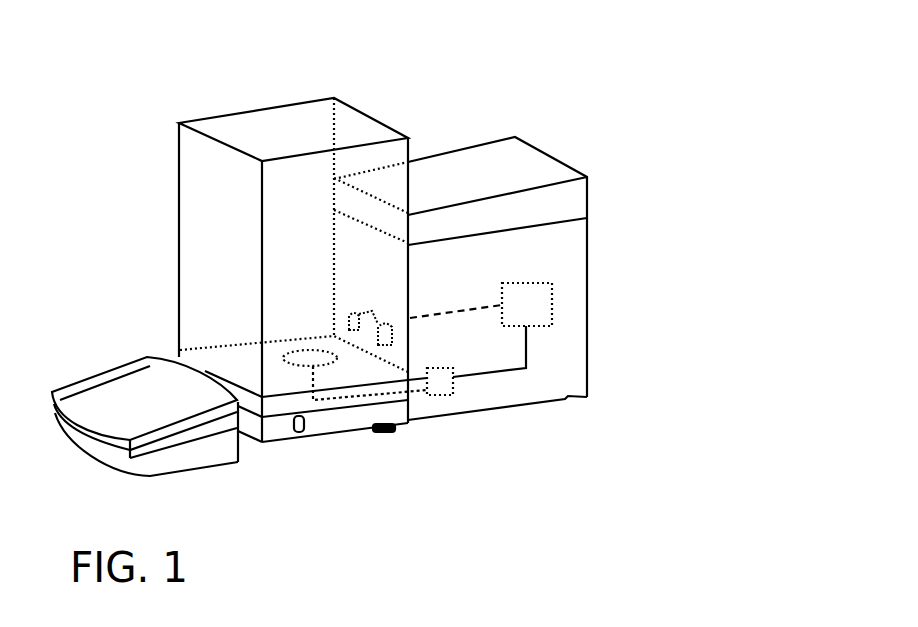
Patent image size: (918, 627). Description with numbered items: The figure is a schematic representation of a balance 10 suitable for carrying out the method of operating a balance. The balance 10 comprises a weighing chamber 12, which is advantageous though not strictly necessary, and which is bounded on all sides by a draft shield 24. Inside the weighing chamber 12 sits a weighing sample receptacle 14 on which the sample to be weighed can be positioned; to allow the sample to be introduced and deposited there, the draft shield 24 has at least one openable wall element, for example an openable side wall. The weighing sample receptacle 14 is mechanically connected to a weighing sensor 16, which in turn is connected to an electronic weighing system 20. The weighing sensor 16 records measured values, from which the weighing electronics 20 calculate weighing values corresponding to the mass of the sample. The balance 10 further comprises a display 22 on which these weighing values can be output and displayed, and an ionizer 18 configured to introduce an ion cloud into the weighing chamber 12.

The balance 10 is at (507, 102).
The weighing chamber 12 is at (267, 137).
The weighing sample receptacle 14 is at (305, 364).
The weighing sensor 16 is at (442, 382).
The ionizer 18 is at (378, 330).
The electronic weighing system 20 is at (528, 310).
The display 22 is at (128, 388).
The draft shield 24 is at (177, 150).